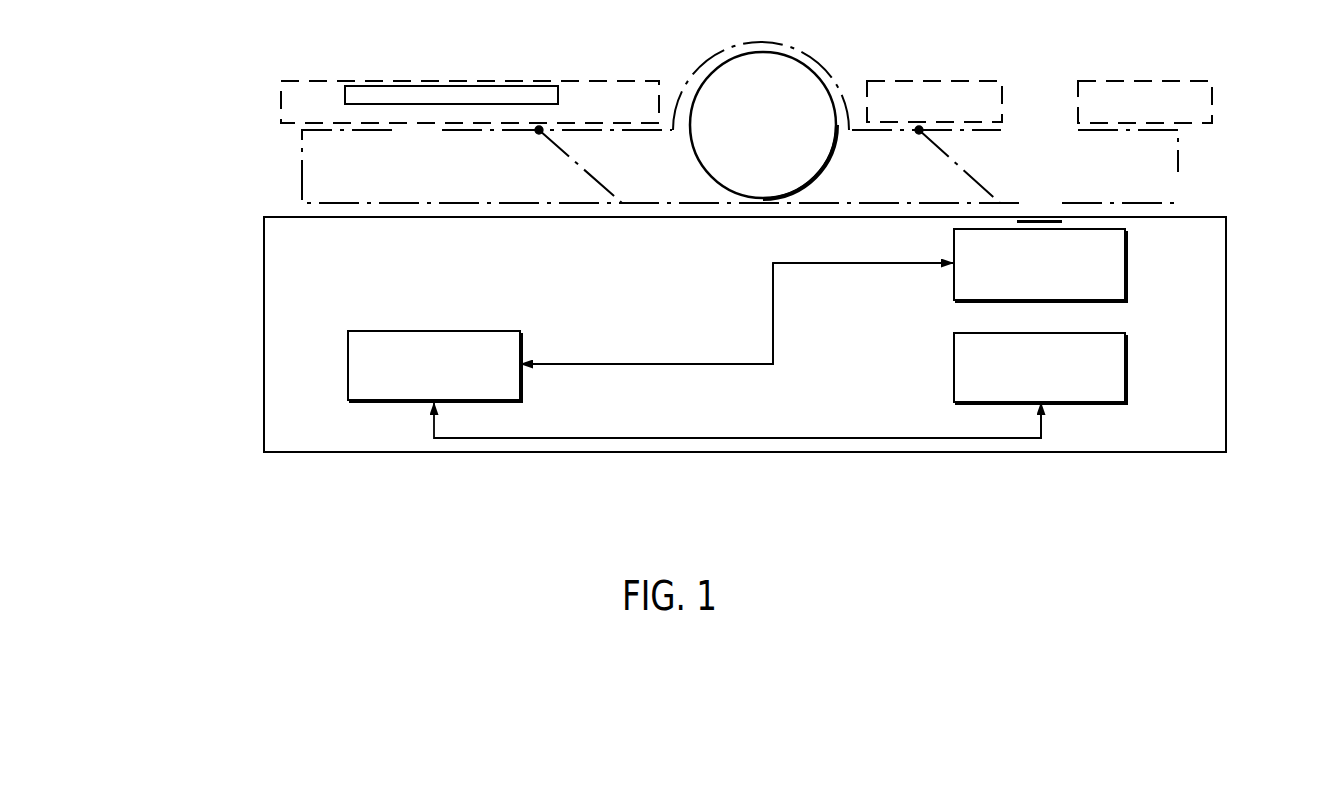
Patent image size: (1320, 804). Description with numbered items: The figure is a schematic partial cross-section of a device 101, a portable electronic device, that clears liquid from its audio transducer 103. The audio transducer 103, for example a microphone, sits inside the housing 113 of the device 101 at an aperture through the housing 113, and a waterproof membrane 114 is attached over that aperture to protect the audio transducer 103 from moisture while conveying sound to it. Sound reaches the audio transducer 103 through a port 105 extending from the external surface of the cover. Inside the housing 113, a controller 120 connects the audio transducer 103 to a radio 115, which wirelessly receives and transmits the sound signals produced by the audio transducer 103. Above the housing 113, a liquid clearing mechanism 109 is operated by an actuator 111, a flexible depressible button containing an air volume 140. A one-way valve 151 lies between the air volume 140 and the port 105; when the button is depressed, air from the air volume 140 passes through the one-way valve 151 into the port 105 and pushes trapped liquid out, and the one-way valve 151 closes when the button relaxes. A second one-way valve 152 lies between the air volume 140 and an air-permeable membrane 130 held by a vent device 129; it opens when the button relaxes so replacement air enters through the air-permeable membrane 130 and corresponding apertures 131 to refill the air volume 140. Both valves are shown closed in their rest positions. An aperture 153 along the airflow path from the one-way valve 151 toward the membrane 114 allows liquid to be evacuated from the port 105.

The device 101 is at (215, 472).
The audio transducer 103 is at (1128, 265).
The port 105 is at (1040, 100).
The liquid clearing mechanism 109 is at (302, 167).
The actuator 111 is at (798, 48).
The housing 113 is at (738, 453).
The membrane 114 is at (1040, 221).
The radio 115 is at (1129, 372).
The controller 120 is at (348, 365).
The vent device 129 is at (366, 81).
The air-permeable membrane 130 is at (420, 84).
The apertures 131 is at (416, 133).
The air volume 140 is at (725, 83).
The one-way valve 151 is at (943, 153).
The second one-way valve 152 is at (600, 172).
The aperture 153 is at (1178, 189).